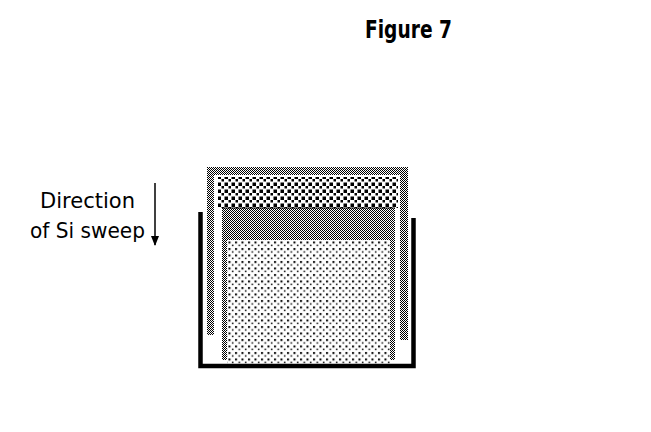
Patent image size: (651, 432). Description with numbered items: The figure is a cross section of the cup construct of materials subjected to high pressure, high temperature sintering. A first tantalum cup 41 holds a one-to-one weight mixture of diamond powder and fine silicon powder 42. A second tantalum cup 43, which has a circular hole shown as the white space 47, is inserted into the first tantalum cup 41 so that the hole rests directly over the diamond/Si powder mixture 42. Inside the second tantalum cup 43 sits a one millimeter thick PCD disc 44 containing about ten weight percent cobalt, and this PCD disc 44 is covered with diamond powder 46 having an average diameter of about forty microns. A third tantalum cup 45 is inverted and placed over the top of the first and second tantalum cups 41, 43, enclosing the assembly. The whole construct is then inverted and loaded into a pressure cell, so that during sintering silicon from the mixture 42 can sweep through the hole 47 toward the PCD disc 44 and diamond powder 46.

The first tantalum cup 41 is at (210, 168).
The diamond/Si powder mixture 42 is at (372, 188).
The second tantalum cup 43 is at (220, 350).
The PCD disc 44 is at (362, 232).
The third tantalum cup 45 is at (420, 289).
The diamond powder 46 is at (368, 300).
The white space 47 is at (323, 205).